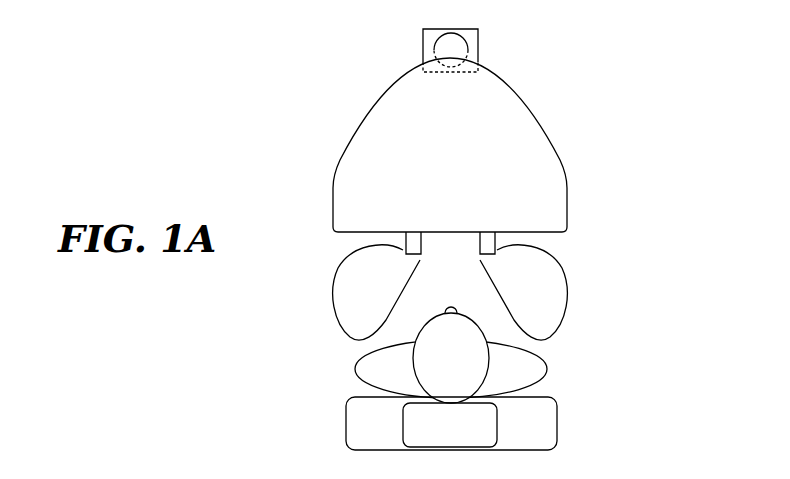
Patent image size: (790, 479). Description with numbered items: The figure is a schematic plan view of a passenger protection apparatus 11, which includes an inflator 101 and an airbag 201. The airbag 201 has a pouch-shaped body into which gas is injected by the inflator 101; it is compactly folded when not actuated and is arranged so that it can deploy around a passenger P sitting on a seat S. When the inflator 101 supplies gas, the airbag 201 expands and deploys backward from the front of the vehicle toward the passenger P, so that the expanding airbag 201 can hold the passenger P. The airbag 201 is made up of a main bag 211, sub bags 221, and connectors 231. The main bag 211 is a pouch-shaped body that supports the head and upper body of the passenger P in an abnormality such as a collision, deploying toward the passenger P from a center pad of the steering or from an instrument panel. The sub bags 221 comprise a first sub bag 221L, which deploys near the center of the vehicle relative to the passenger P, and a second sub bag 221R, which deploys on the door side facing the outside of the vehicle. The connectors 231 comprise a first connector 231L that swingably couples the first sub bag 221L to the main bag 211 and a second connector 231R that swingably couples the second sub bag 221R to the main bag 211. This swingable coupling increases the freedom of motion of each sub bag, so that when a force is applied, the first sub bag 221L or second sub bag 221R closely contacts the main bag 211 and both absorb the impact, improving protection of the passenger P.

The passenger protection apparatus 11 is at (303, 48).
The inflator 101 is at (423, 38).
The airbag 201 is at (662, 117).
The main bag 211 is at (543, 153).
The connectors 231 is at (622, 170).
The first connector 231L is at (412, 232).
The second connector 231R is at (490, 232).
The sub bags 221 is at (622, 235).
The first sub bag 221L is at (365, 300).
The second sub bag 221R is at (533, 302).
The passenger P is at (367, 364).
The seat S is at (367, 430).